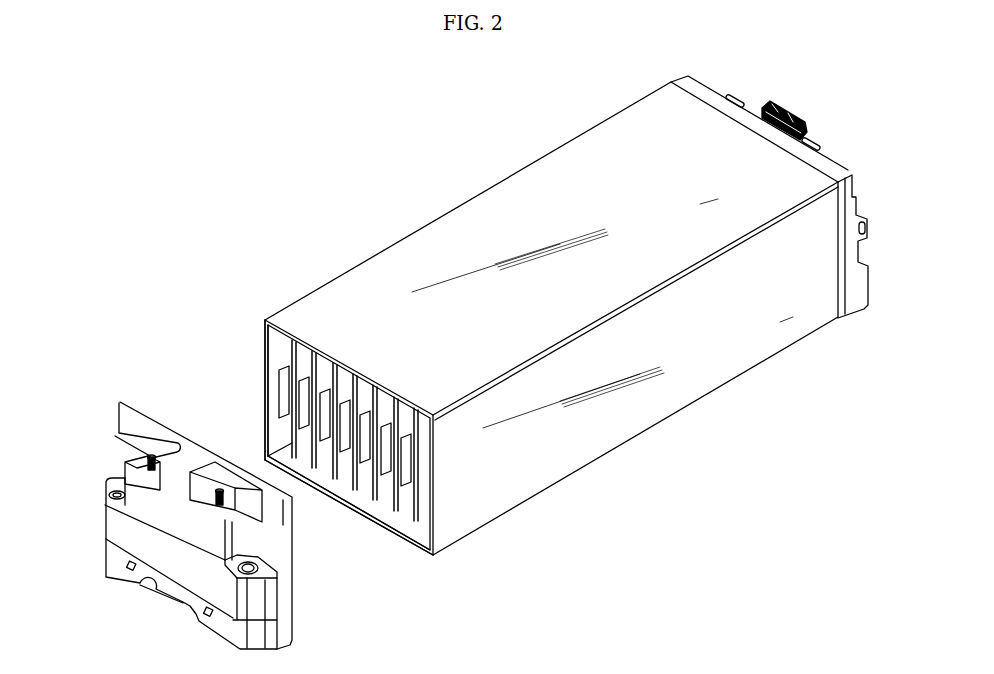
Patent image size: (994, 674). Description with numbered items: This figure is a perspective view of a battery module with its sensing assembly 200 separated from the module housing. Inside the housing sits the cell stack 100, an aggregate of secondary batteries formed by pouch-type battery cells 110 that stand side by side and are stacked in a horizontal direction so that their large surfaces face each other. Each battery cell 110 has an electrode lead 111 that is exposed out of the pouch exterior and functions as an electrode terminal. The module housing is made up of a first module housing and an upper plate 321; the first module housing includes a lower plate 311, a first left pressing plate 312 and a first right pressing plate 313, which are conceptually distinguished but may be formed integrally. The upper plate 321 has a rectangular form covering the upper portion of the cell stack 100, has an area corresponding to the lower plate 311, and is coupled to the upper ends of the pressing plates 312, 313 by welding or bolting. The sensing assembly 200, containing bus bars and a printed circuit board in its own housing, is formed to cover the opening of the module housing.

The cell stack 100 is at (412, 536).
The pouch-type battery cell 110 is at (302, 435).
The electrode lead 111 is at (281, 391).
The sensing assembly 200 is at (818, 122).
The lower plate 311 is at (377, 524).
The first left pressing plate 312 is at (265, 344).
The first right pressing plate 313 is at (542, 465).
The upper plate 321 is at (518, 193).